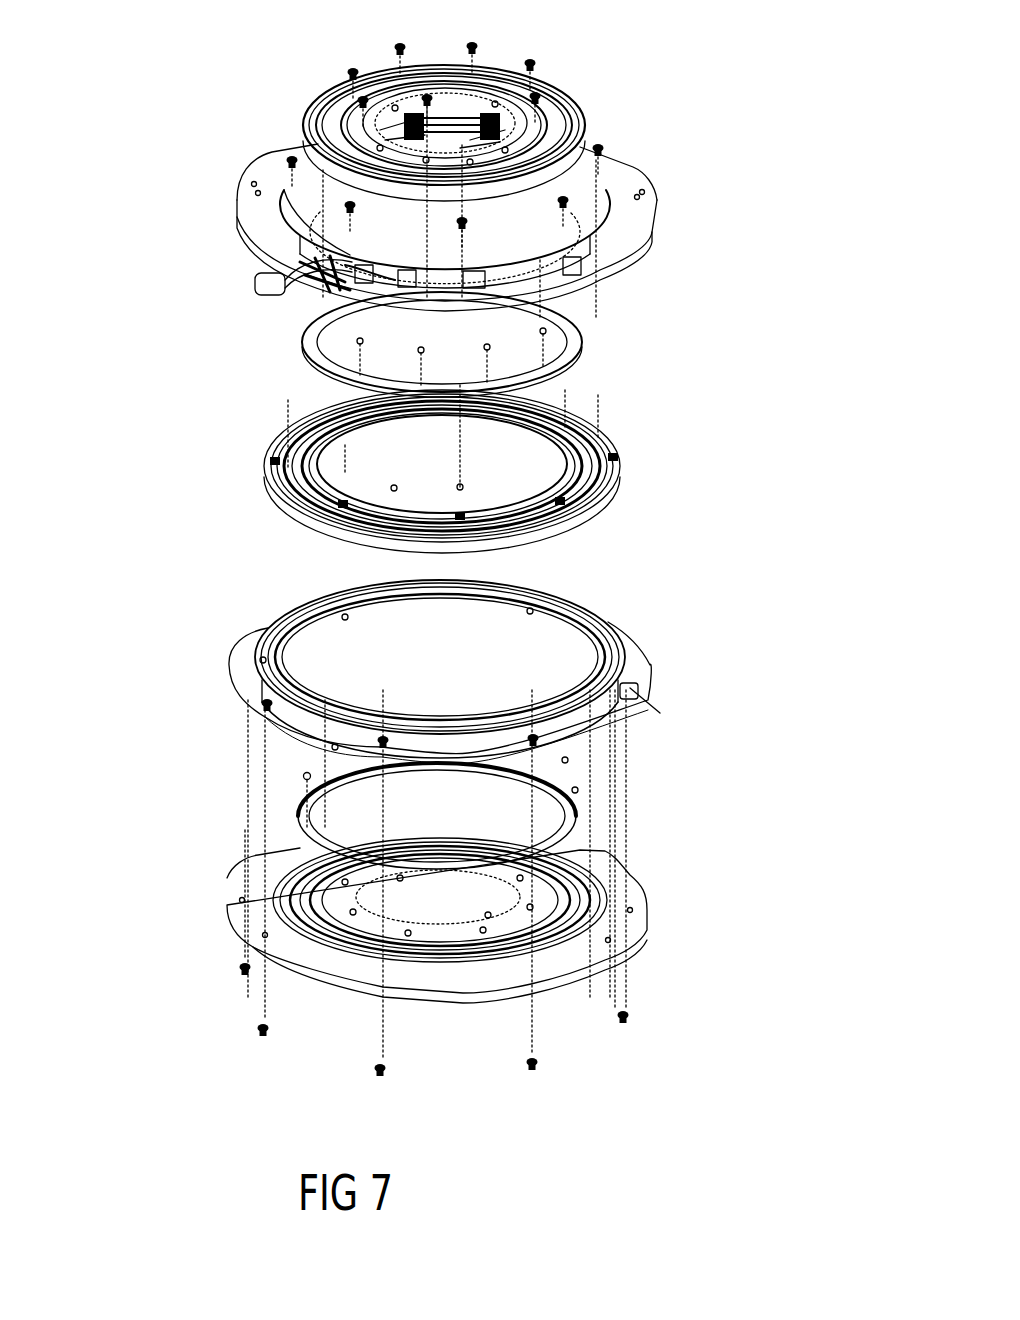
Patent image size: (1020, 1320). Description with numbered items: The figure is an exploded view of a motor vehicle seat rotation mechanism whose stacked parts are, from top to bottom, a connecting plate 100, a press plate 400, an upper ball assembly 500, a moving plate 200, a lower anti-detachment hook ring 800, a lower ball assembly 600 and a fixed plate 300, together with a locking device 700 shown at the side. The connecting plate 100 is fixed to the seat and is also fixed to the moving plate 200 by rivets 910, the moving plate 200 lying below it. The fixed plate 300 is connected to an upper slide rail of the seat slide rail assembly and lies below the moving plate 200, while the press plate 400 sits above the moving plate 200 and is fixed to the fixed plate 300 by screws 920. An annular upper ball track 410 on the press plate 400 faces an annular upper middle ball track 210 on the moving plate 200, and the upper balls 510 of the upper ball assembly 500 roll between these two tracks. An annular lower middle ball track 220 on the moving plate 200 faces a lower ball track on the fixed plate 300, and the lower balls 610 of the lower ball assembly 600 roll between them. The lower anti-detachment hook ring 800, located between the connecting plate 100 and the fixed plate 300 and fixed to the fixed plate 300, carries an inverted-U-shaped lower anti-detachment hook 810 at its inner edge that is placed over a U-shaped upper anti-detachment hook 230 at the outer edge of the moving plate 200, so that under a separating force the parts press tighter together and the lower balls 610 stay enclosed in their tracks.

The connecting plate 100 is at (655, 205).
The moving plate 200 is at (603, 445).
The upper middle ball track 210 is at (573, 432).
The lower middle ball track 220 is at (607, 500).
The upper anti-detachment hook 230 is at (620, 465).
The fixed plate 300 is at (640, 880).
The press plate 400 is at (558, 100).
The upper ball track 410 is at (578, 128).
The upper ball assembly 500 is at (296, 353).
The upper balls 510 is at (637, 322).
The lower ball assembly 600 is at (300, 829).
The lower balls 610 is at (307, 772).
The locking device 700 is at (245, 291).
The lower anti-detachment hook ring 800 is at (632, 670).
The lower anti-detachment hook 810 is at (592, 617).
The rivets 910 is at (606, 150).
The screws 920 is at (622, 690).